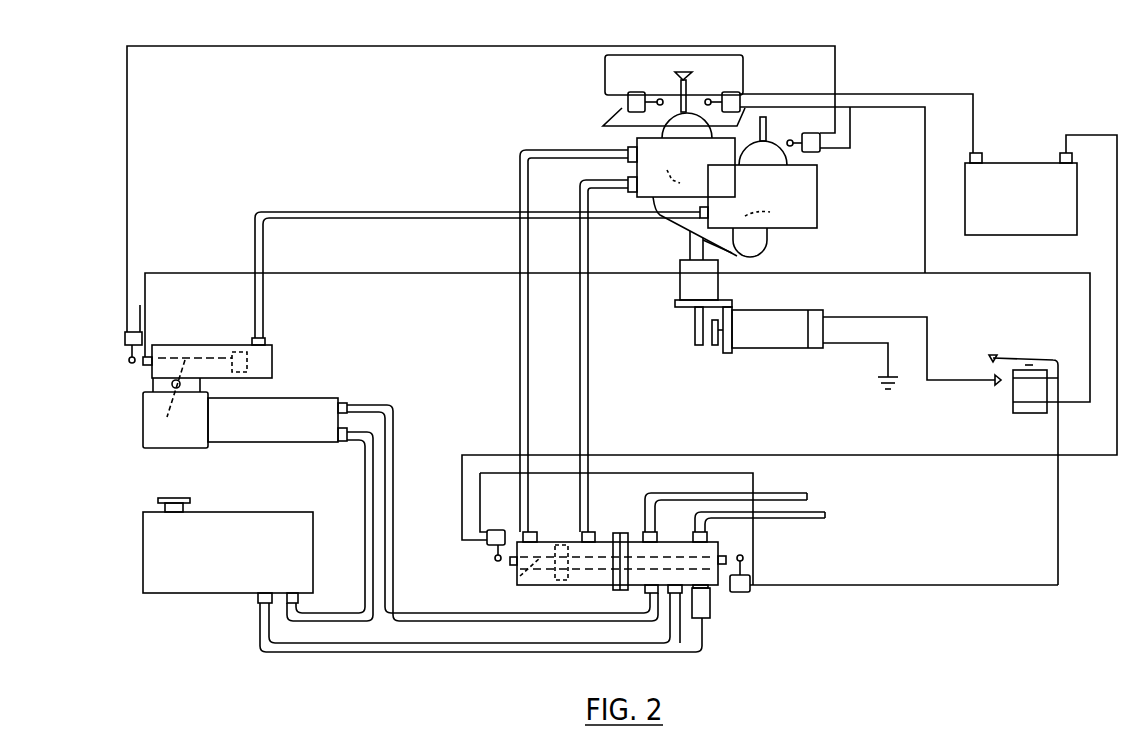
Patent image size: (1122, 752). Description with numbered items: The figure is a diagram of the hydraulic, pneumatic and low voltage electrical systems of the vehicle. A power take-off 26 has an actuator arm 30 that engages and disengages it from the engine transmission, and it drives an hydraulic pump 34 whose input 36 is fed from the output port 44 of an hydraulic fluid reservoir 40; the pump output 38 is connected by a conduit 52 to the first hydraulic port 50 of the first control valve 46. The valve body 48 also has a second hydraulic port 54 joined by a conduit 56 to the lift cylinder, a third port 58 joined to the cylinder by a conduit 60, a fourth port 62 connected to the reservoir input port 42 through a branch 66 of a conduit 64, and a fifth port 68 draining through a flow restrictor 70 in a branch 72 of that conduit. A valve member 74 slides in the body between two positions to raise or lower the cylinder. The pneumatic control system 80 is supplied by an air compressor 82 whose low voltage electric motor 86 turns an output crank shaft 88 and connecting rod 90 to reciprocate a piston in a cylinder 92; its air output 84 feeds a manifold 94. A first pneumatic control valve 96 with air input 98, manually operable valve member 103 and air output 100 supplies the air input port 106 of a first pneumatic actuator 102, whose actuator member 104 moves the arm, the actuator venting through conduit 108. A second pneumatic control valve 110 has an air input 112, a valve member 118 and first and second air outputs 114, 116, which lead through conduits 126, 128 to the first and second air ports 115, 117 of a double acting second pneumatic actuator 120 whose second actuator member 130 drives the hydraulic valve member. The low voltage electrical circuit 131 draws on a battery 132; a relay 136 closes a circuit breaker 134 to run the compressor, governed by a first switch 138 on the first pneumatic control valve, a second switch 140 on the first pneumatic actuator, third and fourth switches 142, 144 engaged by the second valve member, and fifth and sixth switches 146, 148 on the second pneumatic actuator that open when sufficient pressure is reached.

The power take-off 26 is at (155, 440).
The actuator arm 30 is at (165, 403).
The hydraulic pump 34 is at (260, 428).
The input 36 is at (345, 441).
The output 38 is at (347, 405).
The hydraulic fluid reservoir 40 is at (218, 548).
The input port 42 is at (258, 598).
The output port 44 is at (298, 600).
The first control valve 46 is at (718, 549).
The valve body 48 is at (713, 583).
The first hydraulic port 50 is at (645, 589).
The conduit 52 is at (393, 452).
The second hydraulic port 54 is at (648, 532).
The conduit 56 is at (708, 496).
The third port 58 is at (695, 532).
The conduit 60 is at (795, 516).
The fourth port 62 is at (669, 599).
The conduit 64 is at (470, 652).
The branch 66 is at (678, 623).
The fifth port 68 is at (712, 595).
The flow restrictor 70 is at (705, 625).
The branch 72 is at (705, 634).
The valve member 74 is at (732, 558).
The pneumatic control system 80 is at (442, 170).
The air compressor 82 is at (721, 325).
The air output 84 is at (688, 248).
The low voltage electric motor 86 is at (772, 335).
The output crank shaft 88 is at (710, 345).
The connecting rod 90 is at (695, 320).
The cylinder 92 is at (680, 290).
The manifold 94 is at (762, 238).
The first pneumatic control valve 96 is at (754, 197).
The air input 98 is at (770, 213).
The air output 100 is at (708, 210).
The first pneumatic actuator 102 is at (272, 364).
The manually operable valve member 103 is at (768, 133).
The actuator member 104 is at (208, 352).
The air input port 106 is at (265, 340).
The conduit 108 is at (428, 219).
The second pneumatic control valve 110 is at (697, 159).
The air input 112 is at (672, 164).
The first air output 114 is at (628, 150).
The first air port 115 is at (523, 532).
The second air output 116 is at (628, 182).
The second air port 117 is at (582, 532).
The valve member 118 is at (680, 94).
The second pneumatic actuator 120 is at (545, 576).
The conduit 126 is at (520, 339).
The conduit 128 is at (580, 369).
The second actuator member 130 is at (510, 578).
The low voltage electrical circuit 131 is at (935, 71).
The battery 132 is at (1007, 209).
The circuit breaker 134 is at (1020, 359).
The relay 136 is at (1022, 408).
The first switch 138 is at (818, 150).
The second switch 140 is at (125, 340).
The third switch 142 is at (628, 102).
The fourth switch 144 is at (733, 92).
The fifth switch 146 is at (487, 545).
The sixth switch 148 is at (752, 581).